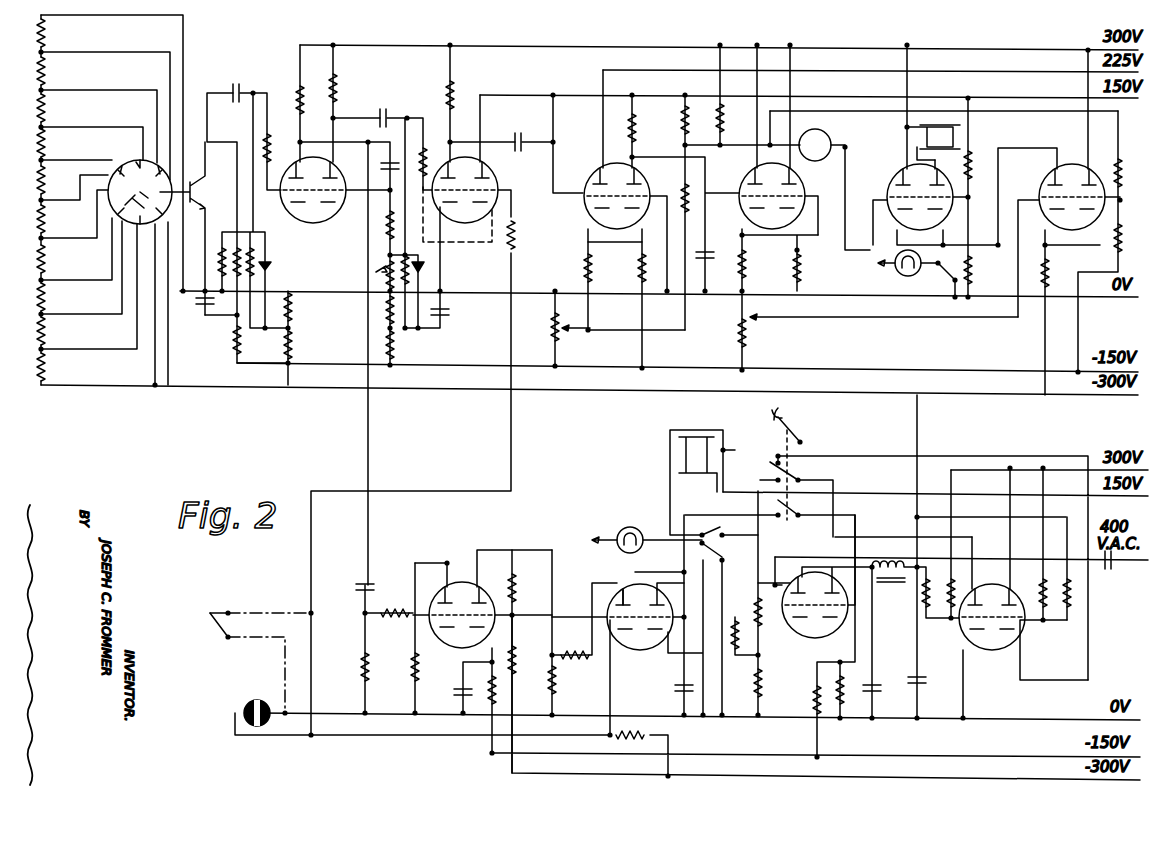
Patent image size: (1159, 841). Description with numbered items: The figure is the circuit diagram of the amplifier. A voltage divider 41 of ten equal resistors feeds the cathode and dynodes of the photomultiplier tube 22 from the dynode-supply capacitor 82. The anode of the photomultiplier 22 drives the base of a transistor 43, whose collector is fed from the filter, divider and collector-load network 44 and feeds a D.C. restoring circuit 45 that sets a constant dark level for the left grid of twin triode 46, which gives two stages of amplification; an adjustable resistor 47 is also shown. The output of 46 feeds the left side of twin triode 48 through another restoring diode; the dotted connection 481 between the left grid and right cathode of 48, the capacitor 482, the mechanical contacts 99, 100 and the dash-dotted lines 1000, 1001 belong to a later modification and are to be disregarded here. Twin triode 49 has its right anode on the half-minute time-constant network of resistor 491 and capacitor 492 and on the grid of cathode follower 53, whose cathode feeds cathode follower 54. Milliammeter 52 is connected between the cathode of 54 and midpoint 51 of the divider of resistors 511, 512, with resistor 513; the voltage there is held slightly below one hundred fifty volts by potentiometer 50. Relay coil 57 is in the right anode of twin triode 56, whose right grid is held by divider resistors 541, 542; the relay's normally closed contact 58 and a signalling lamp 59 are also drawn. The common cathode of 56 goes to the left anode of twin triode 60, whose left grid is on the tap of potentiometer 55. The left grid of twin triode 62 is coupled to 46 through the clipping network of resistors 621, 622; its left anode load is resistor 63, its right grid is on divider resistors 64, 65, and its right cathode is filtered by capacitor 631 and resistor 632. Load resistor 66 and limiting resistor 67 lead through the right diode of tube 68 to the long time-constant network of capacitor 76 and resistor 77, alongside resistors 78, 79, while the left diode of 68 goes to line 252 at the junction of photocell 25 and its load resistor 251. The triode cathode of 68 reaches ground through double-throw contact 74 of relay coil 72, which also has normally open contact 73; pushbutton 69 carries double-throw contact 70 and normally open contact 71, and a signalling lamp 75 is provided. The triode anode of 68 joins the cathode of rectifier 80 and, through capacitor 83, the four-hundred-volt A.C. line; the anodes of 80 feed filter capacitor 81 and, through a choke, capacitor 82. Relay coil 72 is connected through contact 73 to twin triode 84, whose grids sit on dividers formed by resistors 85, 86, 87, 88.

The photomultiplier tube 22 is at (168, 338).
The photocell 25 is at (243, 702).
The voltage divider 41 is at (40, 318).
The transistor 43 is at (204, 318).
The filter network, voltage divider and collector load circuit 44 is at (218, 328).
The D.C. restoring circuit 45 is at (290, 338).
The twin triode 46 is at (284, 155).
The adjustable resistor 47 is at (378, 270).
The twin triode 48 is at (450, 223).
The connection 481 is at (470, 245).
The capacitor 482 is at (519, 134).
The twin triode 49 is at (598, 177).
The resistor 491 is at (622, 116).
The capacitor 492 is at (710, 267).
The potentiometer 50 is at (558, 318).
The midpoint of voltage divider 51 is at (684, 145).
The resistor 511 is at (684, 198).
The resistor 512 is at (680, 104).
The resistor 513 is at (720, 113).
The milliammeter 52 is at (824, 144).
The half of low grid current twin triode 53 is at (747, 184).
The half of twin triode 54 is at (796, 173).
The potentiometer 55 is at (801, 320).
The twin triode 56 is at (898, 182).
The relay coil 57 is at (930, 127).
The resistor 541 is at (970, 162).
The resistor 542 is at (970, 268).
The normally closed contact 58 is at (937, 285).
The signalling lamp 59 is at (887, 264).
The twin triode 60 is at (1064, 176).
The twin triode 62 is at (428, 583).
The resistor 621 is at (363, 673).
The resistor 622 is at (395, 610).
The resistor 63 is at (413, 670).
The capacitor 631 is at (455, 698).
The resistor 632 is at (489, 700).
The resistor 64 is at (513, 590).
The resistor 65 is at (513, 652).
The resistor 66 is at (556, 680).
The resistor 67 is at (575, 654).
The twin diode plus triode 68 is at (651, 650).
The pushbutton 69 is at (799, 416).
The double throw contact 70 is at (798, 468).
The normally open contact 71 is at (800, 513).
The relay coil 72 is at (685, 453).
The normally open contact 73 is at (722, 535).
The double throw contact 74 is at (720, 552).
The signalling lamp 75 is at (623, 530).
The capacitor 76 is at (683, 690).
The resistor 77 is at (735, 654).
The resistor 78 is at (758, 610).
The resistor 79 is at (758, 690).
The rectifier tube 80 is at (807, 640).
The capacitor 81 is at (872, 686).
The capacitor 82 is at (917, 682).
The capacitor 83 is at (1111, 567).
The twin triode 84 is at (986, 648).
The resistor 85 is at (926, 610).
The resistor 86 is at (952, 622).
The resistor 87 is at (1043, 622).
The resistor 88 is at (1068, 622).
The mechanical contact 99 is at (248, 612).
The mechanical contact 100 is at (226, 638).
The dash-dotted line 1000 is at (276, 612).
The dash-dotted line 1001 is at (252, 639).
The load resistor 251 is at (648, 733).
The line 252 is at (332, 735).